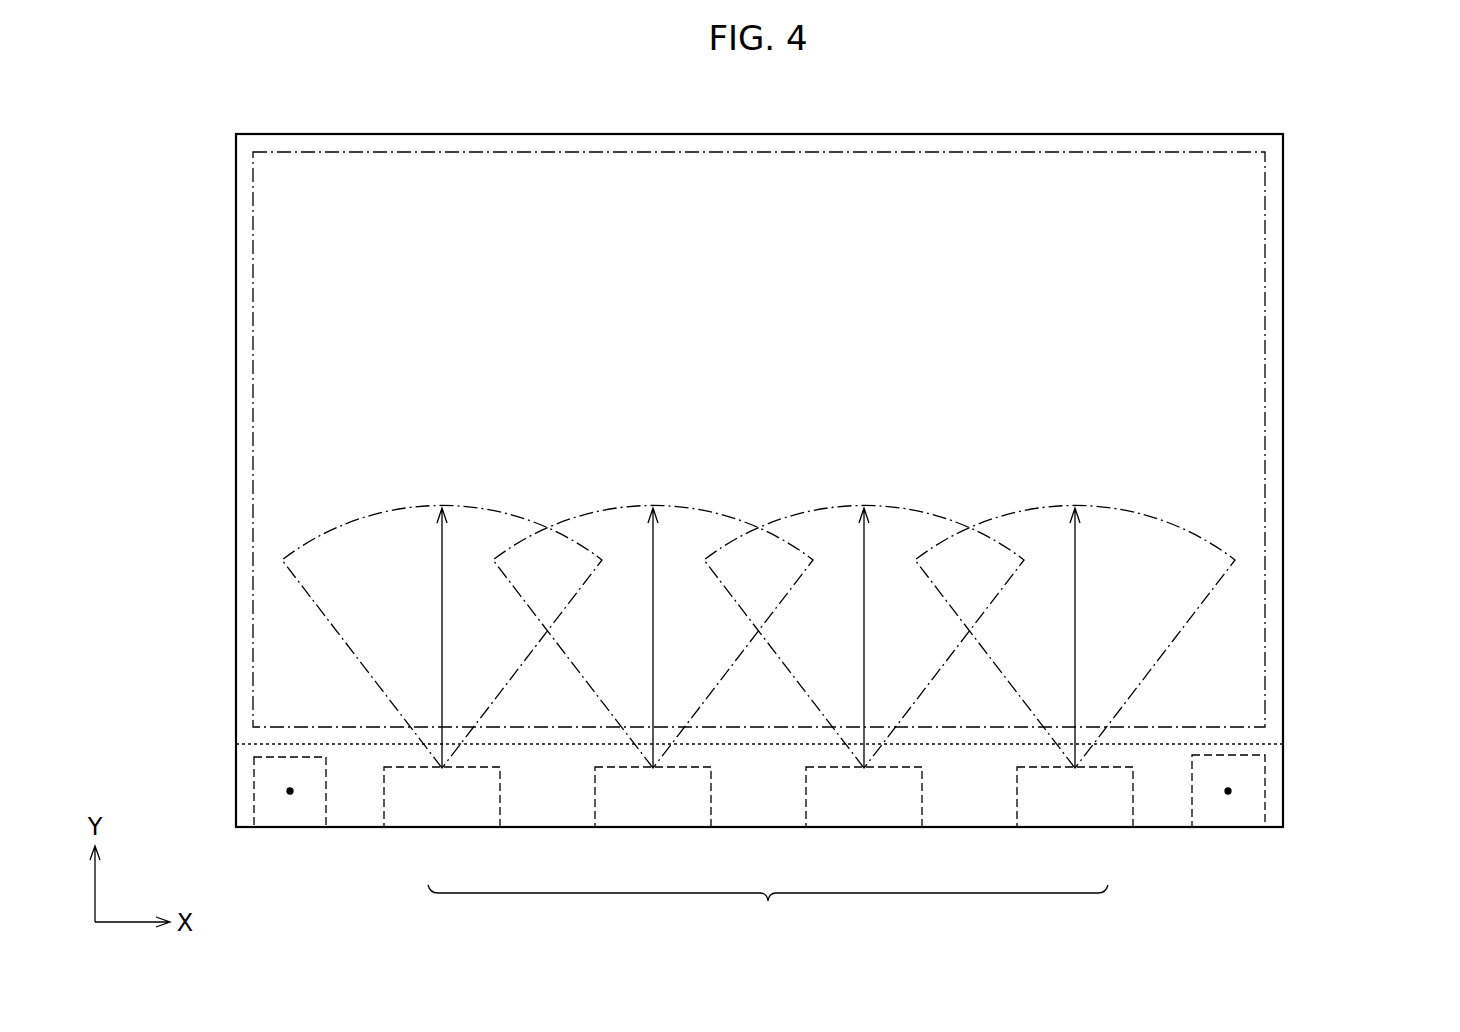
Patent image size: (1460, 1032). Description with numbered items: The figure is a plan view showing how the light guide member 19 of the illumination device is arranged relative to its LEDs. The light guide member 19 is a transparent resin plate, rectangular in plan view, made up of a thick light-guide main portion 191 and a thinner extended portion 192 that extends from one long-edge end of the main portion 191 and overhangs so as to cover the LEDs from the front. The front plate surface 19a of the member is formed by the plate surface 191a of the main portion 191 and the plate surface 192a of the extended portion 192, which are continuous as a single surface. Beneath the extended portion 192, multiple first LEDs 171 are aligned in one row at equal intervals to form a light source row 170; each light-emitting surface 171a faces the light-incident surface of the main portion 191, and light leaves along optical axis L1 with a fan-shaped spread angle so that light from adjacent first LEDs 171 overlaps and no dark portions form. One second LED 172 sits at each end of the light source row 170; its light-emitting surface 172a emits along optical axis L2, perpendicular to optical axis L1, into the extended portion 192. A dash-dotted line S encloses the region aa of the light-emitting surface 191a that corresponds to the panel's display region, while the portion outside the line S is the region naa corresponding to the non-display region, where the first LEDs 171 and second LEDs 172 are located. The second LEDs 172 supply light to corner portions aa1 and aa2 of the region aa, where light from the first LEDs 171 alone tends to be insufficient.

The light guide member 19 is at (1195, 133).
The plate surface on the front side of the light guide member 19a is at (759, 439).
The light-guide main portion 191 is at (1286, 350).
The plate surface of the light-guide main portion 191a is at (1232, 290).
The extended portion 192 is at (1285, 800).
The plate surface of the extended portion 192a is at (1272, 771).
The light source row 170 is at (768, 913).
The first LED 171 is at (458, 800).
The light-emitting surface of the first LED 171a is at (395, 760).
The second LED 172 is at (305, 808).
The light-emitting surface of the second LED 172a is at (256, 822).
The optical axis of the first LEDs L1 is at (441, 548).
The optical axis of the second LEDs L2 is at (290, 791).
The dash-dotted line S is at (511, 152).
The region corresponding to the display region aa is at (906, 178).
The region corresponding to the non-display region naa is at (758, 143).
The corner portion aa1 is at (1249, 712).
The corner portion aa2 is at (262, 714).